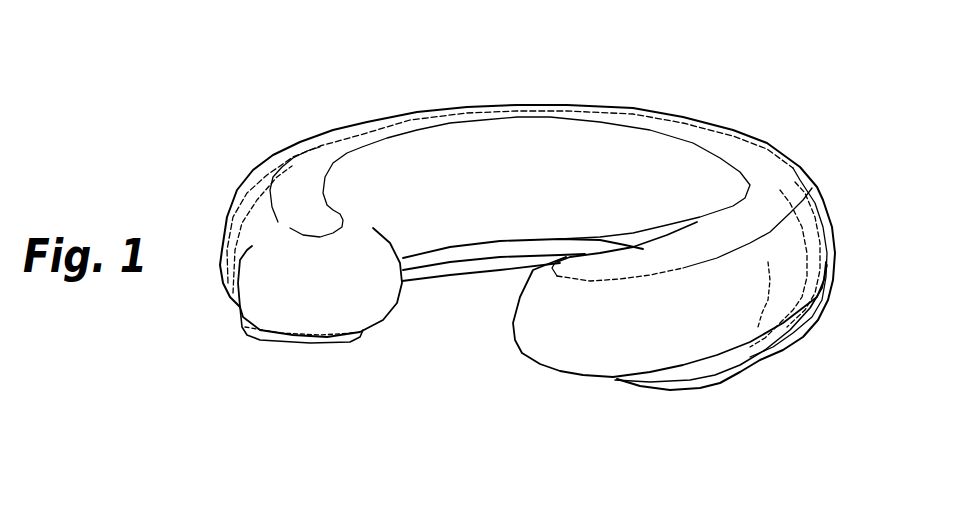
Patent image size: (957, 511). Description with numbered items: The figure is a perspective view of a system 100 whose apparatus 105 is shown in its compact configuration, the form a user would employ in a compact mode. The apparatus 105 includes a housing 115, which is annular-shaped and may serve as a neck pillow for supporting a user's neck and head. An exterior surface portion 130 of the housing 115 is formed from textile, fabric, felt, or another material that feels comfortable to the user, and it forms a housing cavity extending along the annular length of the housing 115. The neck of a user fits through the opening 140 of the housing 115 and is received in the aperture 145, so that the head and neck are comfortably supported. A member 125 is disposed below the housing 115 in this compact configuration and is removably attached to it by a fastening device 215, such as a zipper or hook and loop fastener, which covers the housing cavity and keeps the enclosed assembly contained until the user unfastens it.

The system 100 is at (744, 58).
The apparatus 105 is at (755, 96).
The housing 115 is at (798, 147).
The member 125 is at (752, 390).
The exterior surface portion 130 is at (293, 183).
The opening 140 is at (475, 317).
The aperture 145 is at (438, 297).
The fastening device 215 is at (803, 324).